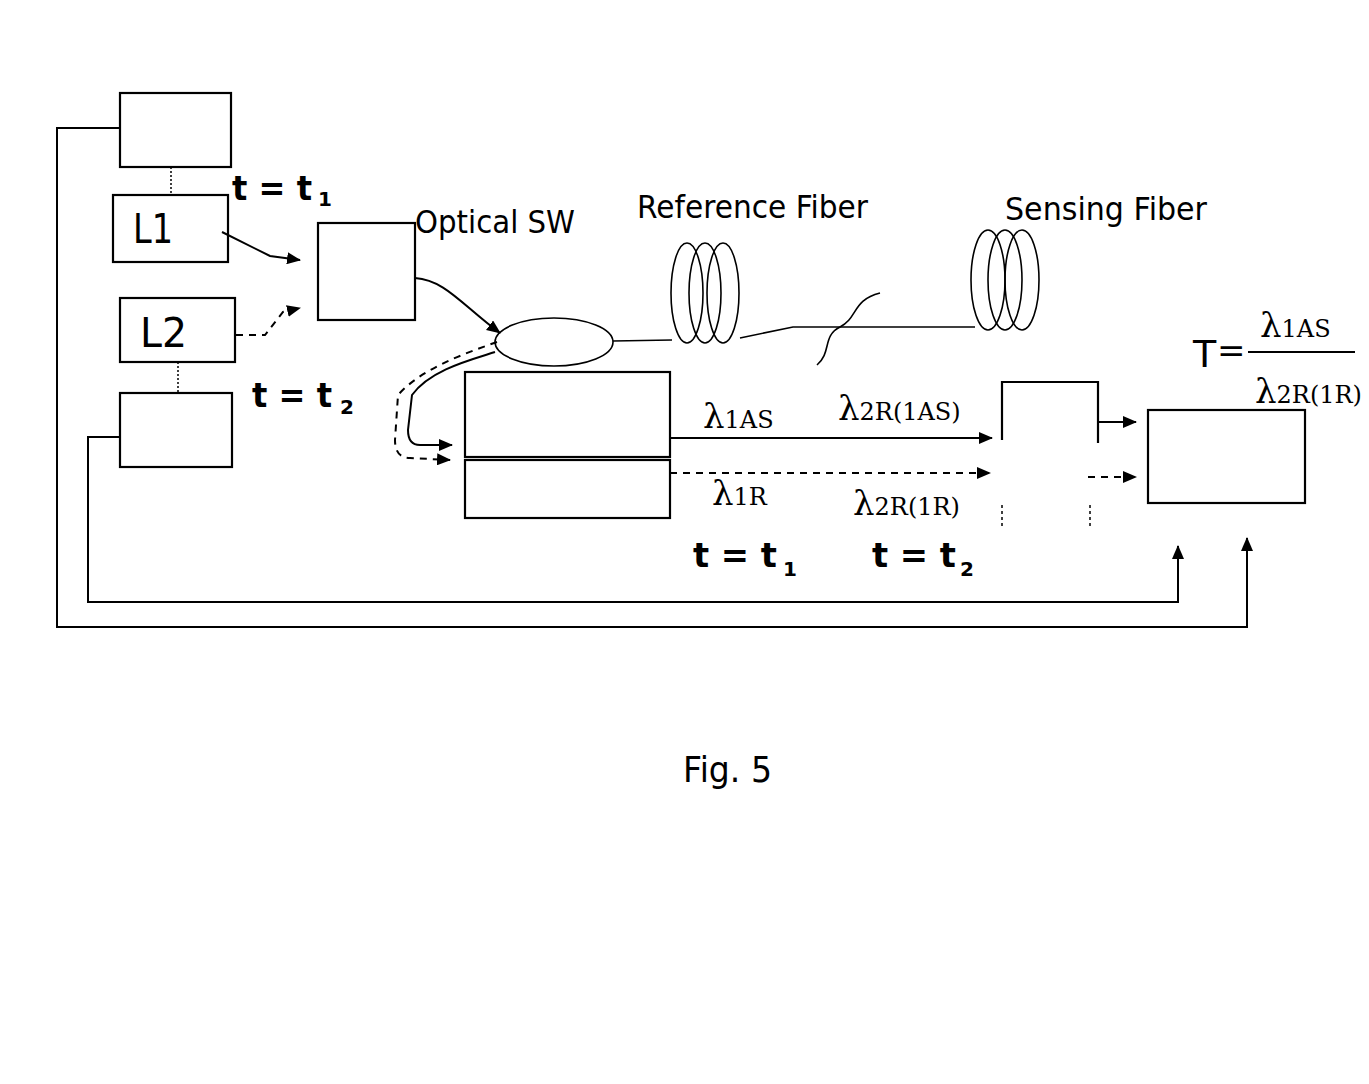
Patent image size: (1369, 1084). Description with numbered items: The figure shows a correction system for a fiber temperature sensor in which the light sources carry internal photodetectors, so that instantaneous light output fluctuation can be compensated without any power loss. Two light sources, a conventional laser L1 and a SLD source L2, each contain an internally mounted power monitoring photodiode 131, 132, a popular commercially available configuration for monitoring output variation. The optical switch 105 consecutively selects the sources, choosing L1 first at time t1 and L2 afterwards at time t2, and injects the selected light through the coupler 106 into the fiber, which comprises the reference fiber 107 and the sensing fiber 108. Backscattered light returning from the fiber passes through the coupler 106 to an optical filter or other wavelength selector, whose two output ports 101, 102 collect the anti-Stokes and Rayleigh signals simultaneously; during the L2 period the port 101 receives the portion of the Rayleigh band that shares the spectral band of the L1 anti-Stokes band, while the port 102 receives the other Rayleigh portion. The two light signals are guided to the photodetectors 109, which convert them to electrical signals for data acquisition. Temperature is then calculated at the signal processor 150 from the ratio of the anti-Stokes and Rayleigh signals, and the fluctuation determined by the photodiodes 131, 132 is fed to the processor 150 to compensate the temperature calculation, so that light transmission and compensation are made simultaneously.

The internally mounted power monitoring photodiode 131 is at (211, 130).
The internally mounted power monitoring photodiode 132 is at (181, 454).
The optical switch 105 is at (366, 271).
The coupler 106 is at (554, 319).
The reference fiber 107 is at (743, 293).
The sensing fiber 108 is at (1048, 280).
The output port of optical filter 101 is at (567, 414).
The output port of optical filter 102 is at (567, 489).
The photodetector 109 is at (1050, 481).
The signal processor 150 is at (1226, 456).